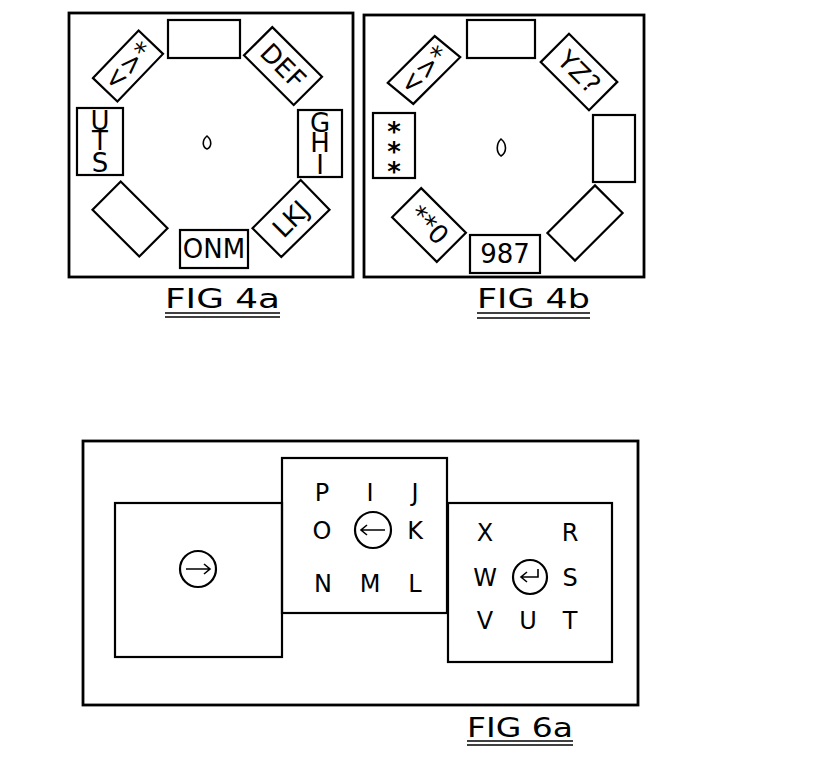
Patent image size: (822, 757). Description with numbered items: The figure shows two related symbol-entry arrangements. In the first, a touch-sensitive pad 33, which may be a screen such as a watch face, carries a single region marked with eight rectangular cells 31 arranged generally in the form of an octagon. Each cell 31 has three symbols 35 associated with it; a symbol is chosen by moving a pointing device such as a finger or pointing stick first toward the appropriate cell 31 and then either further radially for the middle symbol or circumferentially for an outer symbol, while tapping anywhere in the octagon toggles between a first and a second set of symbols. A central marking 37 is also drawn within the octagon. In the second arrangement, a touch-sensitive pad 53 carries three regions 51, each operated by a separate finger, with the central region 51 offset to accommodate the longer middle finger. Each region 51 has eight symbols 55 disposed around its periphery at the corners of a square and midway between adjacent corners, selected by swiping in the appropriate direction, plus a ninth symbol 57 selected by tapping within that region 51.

In FIG. 4A, the rectangular cell 31 is at (195, 58).
In FIG. 4B, the rectangular cell 31 is at (600, 237).
In FIG. 4A, the touch-sensitive pad 33 is at (125, 278).
In FIG. 4B, the touch-sensitive pad 33 is at (413, 280).
In FIG. 4A, the symbol 35 is at (113, 233).
In FIG. 4B, the symbol 35 is at (498, 58).
In FIG. 4A, the center indicator 37 is at (209, 143).
In FIG. 4B, the center indicator 37 is at (505, 150).
In FIG. 6A, the region 51 is at (158, 658).
In FIG. 6A, the touch-sensitive pad 53 is at (640, 525).
In FIG. 6A, the symbol 55 is at (140, 572).
In FIG. 6A, the ninth symbol 57 is at (185, 582).